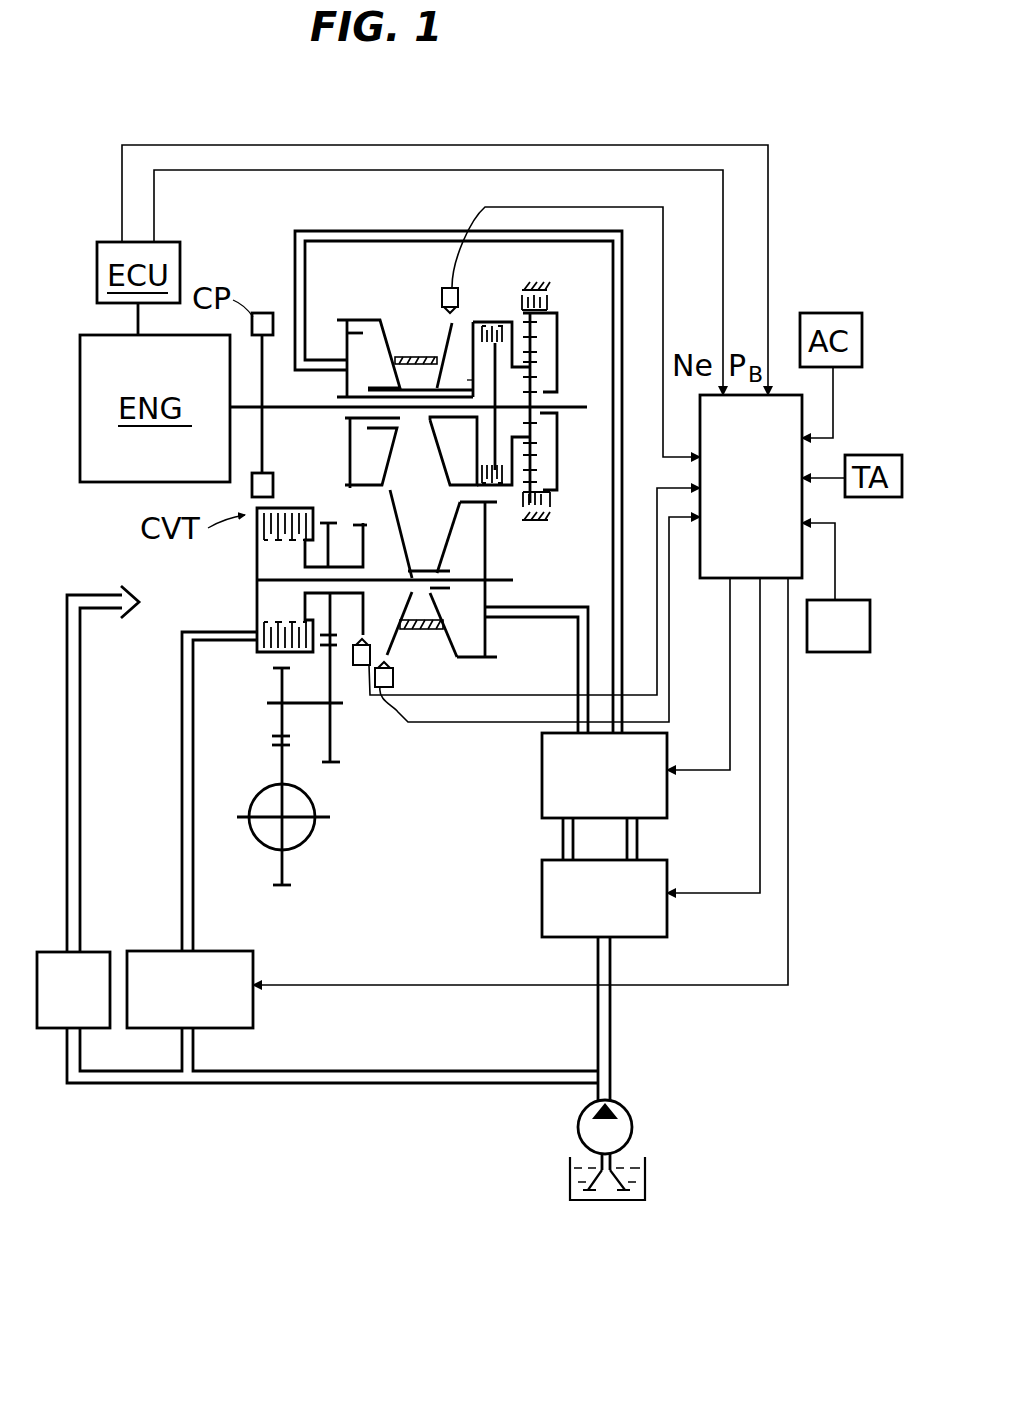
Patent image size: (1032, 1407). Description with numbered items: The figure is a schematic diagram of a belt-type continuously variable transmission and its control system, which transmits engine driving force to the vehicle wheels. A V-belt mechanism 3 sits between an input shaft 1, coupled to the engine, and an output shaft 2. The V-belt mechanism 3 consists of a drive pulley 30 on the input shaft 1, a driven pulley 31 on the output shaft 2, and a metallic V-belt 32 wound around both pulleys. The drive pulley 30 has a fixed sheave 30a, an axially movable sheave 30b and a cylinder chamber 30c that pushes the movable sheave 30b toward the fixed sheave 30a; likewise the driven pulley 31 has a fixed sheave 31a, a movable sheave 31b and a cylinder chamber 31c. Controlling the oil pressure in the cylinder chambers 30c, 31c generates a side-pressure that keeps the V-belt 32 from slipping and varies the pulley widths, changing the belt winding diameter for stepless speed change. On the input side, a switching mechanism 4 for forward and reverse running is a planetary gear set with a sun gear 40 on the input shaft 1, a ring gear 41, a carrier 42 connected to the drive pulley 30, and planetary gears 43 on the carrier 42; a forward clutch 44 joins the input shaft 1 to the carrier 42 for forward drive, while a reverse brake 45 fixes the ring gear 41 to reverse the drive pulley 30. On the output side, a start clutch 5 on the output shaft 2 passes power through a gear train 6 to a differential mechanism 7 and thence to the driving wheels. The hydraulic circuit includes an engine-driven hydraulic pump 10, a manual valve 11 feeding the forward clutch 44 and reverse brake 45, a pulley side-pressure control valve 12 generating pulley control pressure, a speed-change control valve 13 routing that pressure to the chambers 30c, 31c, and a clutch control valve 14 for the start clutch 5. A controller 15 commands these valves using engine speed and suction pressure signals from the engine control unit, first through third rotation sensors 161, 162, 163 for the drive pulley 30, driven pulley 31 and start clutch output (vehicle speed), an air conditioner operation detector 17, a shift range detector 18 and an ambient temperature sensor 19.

The input shaft 1 is at (297, 405).
The output shaft 2 is at (395, 575).
The V-belt mechanism 3 is at (389, 482).
The switching mechanism 4 is at (566, 381).
The start clutch 5 is at (292, 510).
The gear train 6 is at (271, 712).
The differential mechanism 7 is at (309, 831).
The hydraulic pump 10 is at (632, 1113).
The manual valve 11 is at (90, 1007).
The pulley side-pressure control valve 12 is at (621, 922).
The speed-change control valve 13 is at (621, 797).
The clutch control valve 14 is at (205, 1007).
The controller 15 is at (763, 502).
The first rotation sensor 161 is at (447, 287).
The second rotation sensor 162 is at (393, 677).
The third rotation sensor 163 is at (355, 667).
The air conditioner operation detector 17 is at (822, 312).
The shift range detector 18 is at (856, 647).
The temperature sensor 19 is at (867, 453).
The drive pulley 30 is at (341, 432).
The fixed sheave 30a is at (442, 343).
The movable sheave 30b is at (353, 317).
The cylinder chamber 30c is at (350, 335).
The driven pulley 31 is at (487, 611).
The fixed sheave 31a is at (407, 547).
The movable sheave 31b is at (443, 636).
The cylinder chamber 31c is at (468, 523).
The metallic V-belt 32 is at (427, 478).
The sun gear 40 is at (534, 395).
The ring gear 41 is at (545, 489).
The carrier 42 is at (459, 381).
The planetary gears 43 is at (532, 343).
The forward clutch 44 is at (483, 320).
The reverse brake 45 is at (548, 300).